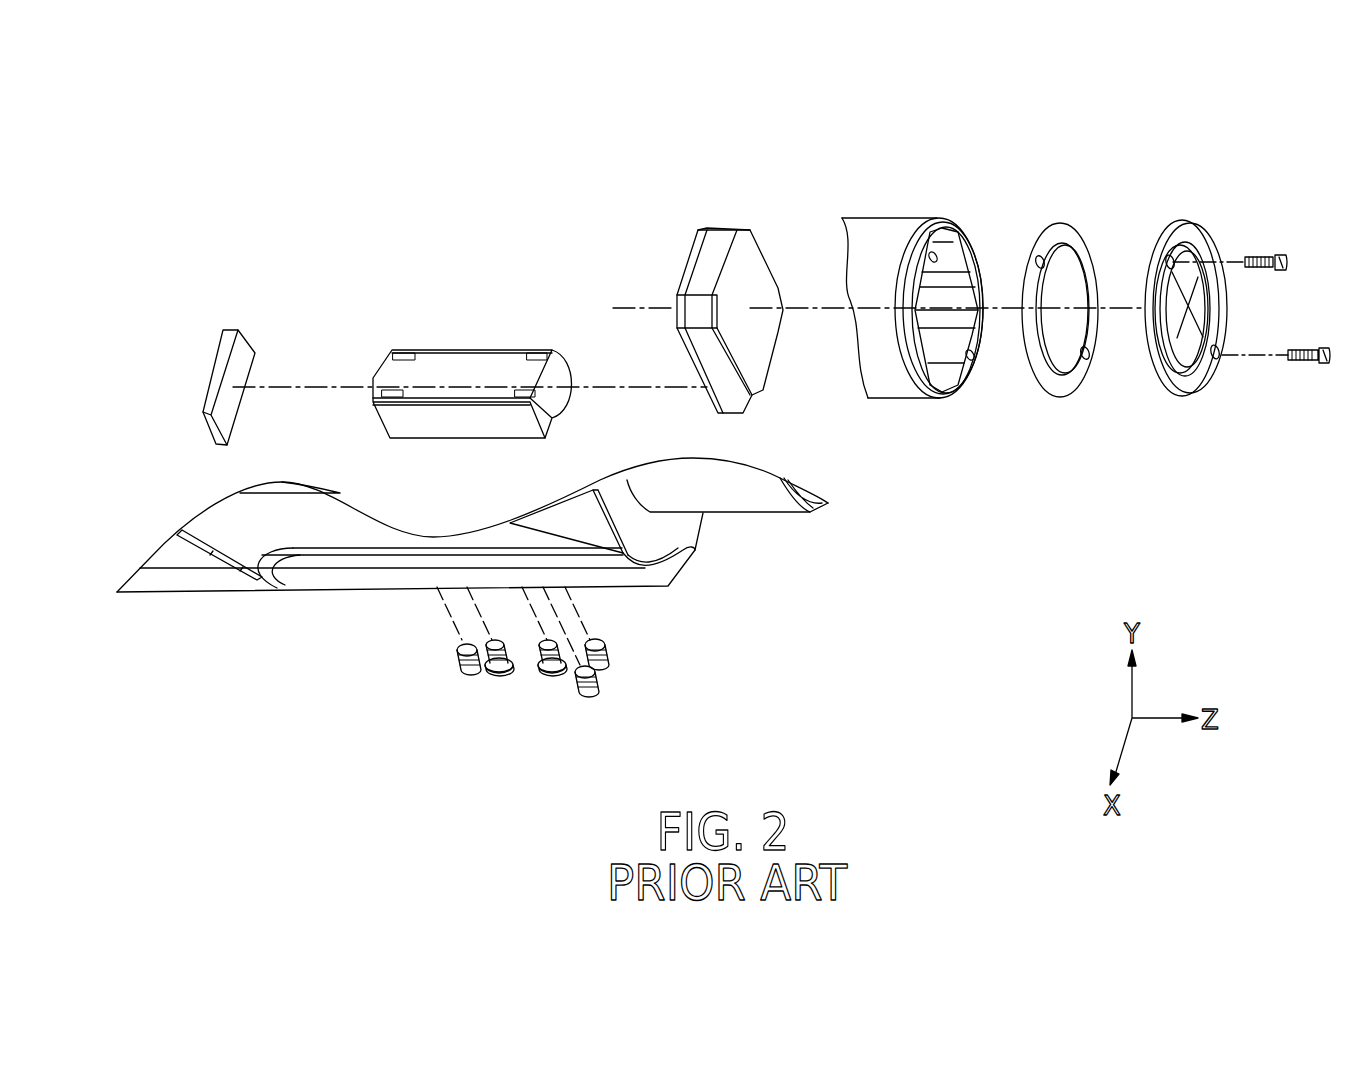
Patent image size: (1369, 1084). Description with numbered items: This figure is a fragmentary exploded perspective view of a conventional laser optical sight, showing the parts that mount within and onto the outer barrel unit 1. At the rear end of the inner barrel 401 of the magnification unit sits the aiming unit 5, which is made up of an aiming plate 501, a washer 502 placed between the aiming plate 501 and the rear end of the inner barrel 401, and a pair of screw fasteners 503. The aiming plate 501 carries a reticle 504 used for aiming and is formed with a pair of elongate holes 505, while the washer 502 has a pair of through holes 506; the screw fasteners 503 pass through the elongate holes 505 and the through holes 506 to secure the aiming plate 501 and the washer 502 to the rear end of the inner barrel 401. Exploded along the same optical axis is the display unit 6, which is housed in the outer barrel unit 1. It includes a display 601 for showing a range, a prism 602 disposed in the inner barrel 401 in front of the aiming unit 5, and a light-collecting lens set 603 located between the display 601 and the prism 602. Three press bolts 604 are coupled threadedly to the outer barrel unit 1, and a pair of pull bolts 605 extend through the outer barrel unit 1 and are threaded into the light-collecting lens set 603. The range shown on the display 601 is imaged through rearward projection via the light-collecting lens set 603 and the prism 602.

The outer barrel unit 1 is at (200, 593).
The aiming unit 5 is at (1217, 215).
The display unit 6 is at (467, 318).
The inner barrel 401 is at (892, 218).
The aiming plate 501 is at (1182, 385).
The washer 502 is at (1057, 328).
The screw fasteners 503 is at (1280, 255).
The reticle 504 is at (1195, 297).
The elongate holes 505 is at (1170, 255).
The through holes 506 is at (1040, 258).
The display 601 is at (228, 335).
The prism 602 is at (762, 262).
The light-collecting lens set 603 is at (496, 360).
The press bolts 604 is at (610, 668).
The pull bolts 605 is at (557, 680).